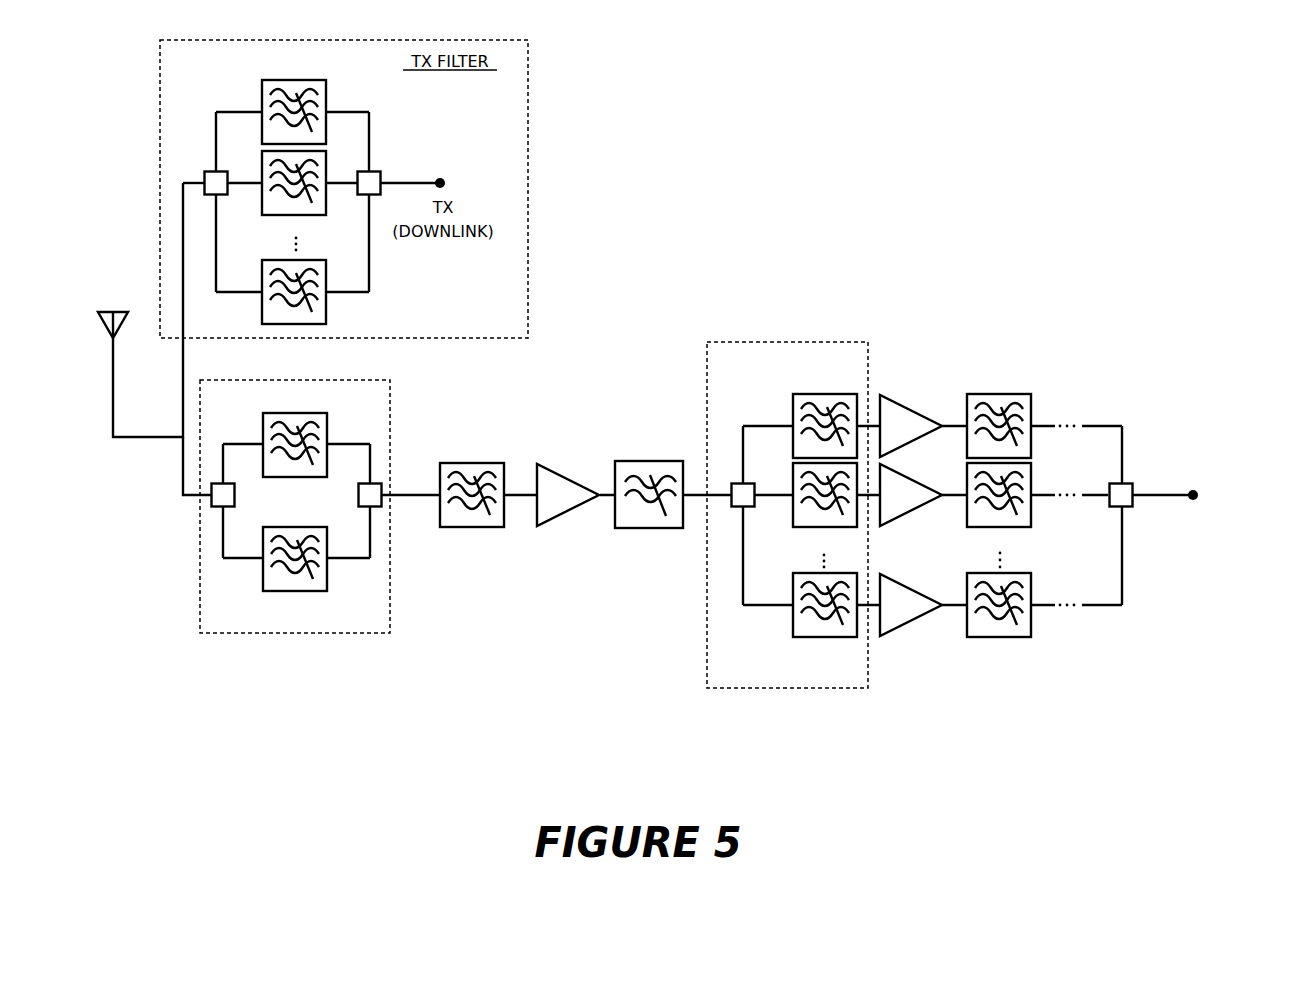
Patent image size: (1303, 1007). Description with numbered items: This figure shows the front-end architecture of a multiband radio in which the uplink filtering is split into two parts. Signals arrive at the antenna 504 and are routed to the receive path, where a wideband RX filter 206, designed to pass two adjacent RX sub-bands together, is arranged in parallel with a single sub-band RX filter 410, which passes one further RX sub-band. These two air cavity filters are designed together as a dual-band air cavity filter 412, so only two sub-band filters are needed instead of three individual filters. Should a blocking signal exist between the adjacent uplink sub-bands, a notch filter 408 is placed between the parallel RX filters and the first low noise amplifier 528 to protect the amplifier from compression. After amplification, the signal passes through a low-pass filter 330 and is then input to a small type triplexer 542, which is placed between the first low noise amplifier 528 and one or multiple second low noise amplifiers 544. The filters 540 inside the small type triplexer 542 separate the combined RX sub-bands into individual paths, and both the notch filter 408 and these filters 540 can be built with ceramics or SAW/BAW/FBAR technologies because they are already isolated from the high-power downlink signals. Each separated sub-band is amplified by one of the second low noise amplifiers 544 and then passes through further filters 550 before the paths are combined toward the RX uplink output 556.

The antenna 504 is at (58, 360).
The single sub-band RX filter 410 is at (295, 434).
The wideband RX filter 206 is at (295, 570).
The dual-band air cavity filter 412 is at (295, 506).
The notch filter 408 is at (472, 507).
The LNA 1 528 is at (568, 480).
The low-pass filter 330 is at (649, 493).
The filters 540 is at (825, 515).
The LNA 2s 544 is at (911, 515).
The band-pass filters 550 is at (1044, 517).
The small type triplexer 542 is at (787, 515).
The RX uplink output port 556 is at (1248, 531).